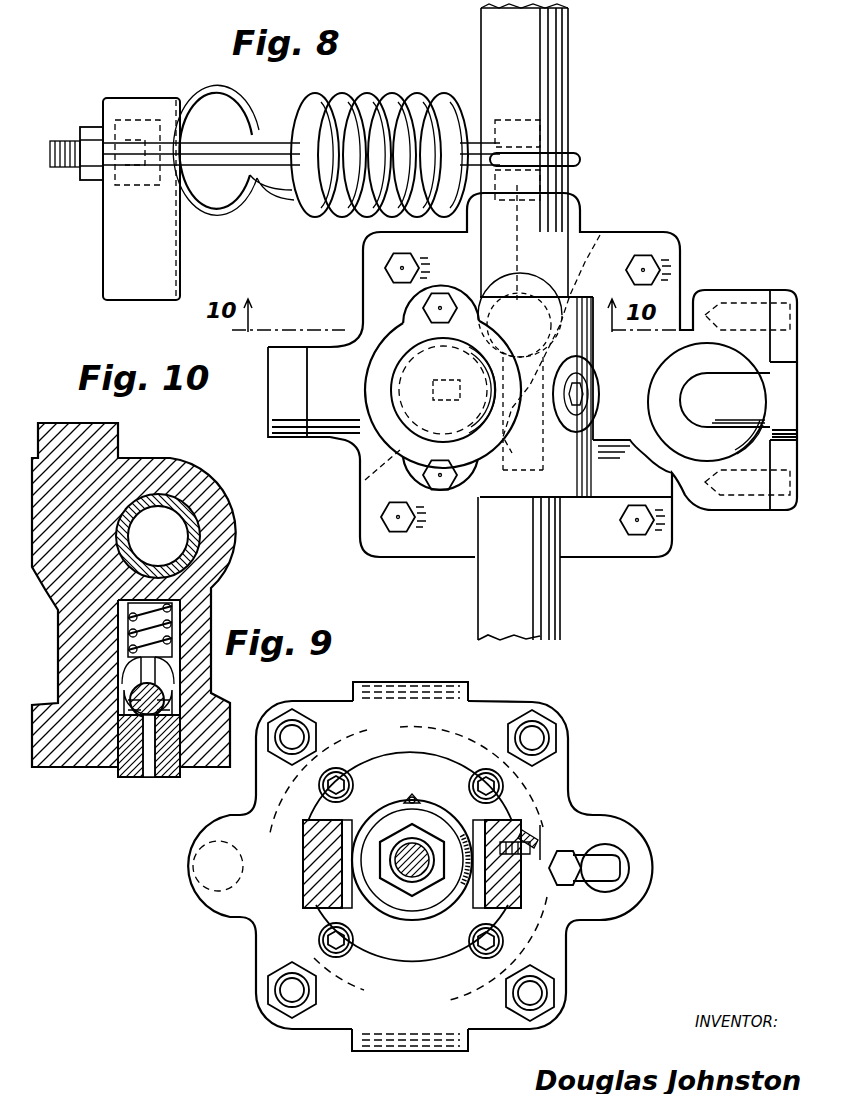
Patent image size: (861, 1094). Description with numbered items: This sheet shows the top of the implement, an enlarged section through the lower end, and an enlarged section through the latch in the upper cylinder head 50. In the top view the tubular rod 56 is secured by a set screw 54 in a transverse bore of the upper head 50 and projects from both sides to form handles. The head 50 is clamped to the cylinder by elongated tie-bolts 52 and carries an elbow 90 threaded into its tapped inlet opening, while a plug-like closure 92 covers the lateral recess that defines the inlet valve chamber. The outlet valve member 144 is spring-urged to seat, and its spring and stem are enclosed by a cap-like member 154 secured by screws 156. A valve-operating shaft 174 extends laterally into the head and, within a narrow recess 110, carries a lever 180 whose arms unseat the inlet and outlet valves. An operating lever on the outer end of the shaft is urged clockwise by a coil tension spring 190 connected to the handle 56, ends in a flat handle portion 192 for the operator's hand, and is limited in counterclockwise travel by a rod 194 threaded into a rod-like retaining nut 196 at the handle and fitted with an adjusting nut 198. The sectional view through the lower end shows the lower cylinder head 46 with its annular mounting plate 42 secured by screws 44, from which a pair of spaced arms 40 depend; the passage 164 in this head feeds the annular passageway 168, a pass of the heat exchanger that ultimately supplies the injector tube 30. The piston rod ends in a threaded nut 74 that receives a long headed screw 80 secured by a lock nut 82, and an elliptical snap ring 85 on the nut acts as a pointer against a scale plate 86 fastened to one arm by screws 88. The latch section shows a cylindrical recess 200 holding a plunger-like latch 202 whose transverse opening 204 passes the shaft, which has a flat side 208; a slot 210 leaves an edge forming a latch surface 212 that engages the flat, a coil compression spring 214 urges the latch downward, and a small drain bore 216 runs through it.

In FIG. 9, the injector tube 30 is at (600, 858).
In FIG. 9, the spaced arms 40 is at (303, 890).
In FIG. 9, the annular mounting plate 42 is at (365, 965).
In FIG. 9, the screws 44 is at (505, 786).
In FIG. 9, the lower cylinder head 46 is at (510, 703).
In FIG. 8, the upper cylinder head 50 is at (640, 232).
In FIG. 10, the upper cylinder head 50 is at (228, 530).
In FIG. 8, the tie-bolts 52 is at (660, 262).
In FIG. 9, the tie-bolts 52 is at (545, 733).
In FIG. 8, the set screw 54 is at (583, 392).
In FIG. 8, the tubular rod 56 is at (568, 78).
In FIG. 10, the tubular rod 56 is at (183, 492).
In FIG. 9, the nut 74 is at (402, 800).
In FIG. 9, the long headed screw 80 is at (410, 883).
In FIG. 9, the lock nut 82 is at (430, 880).
In FIG. 9, the snap ring 85 is at (440, 806).
In FIG. 9, the scale plate 86 is at (548, 828).
In FIG. 9, the screws 88 is at (539, 841).
In FIG. 8, the elbow 90 is at (730, 378).
In FIG. 8, the plug-like closure 92 is at (770, 512).
In FIG. 8, the narrow recess 110 is at (534, 385).
In FIG. 8, the cylindrical valve member 144 is at (356, 477).
In FIG. 8, the cap-like member 154 is at (358, 456).
In FIG. 8, the screws 156 is at (427, 305).
In FIG. 9, the passage 164 is at (200, 905).
In FIG. 9, the annular passageway 168 is at (420, 875).
In FIG. 8, the valve-operating shaft 174 is at (538, 222).
In FIG. 10, the valve-operating shaft 174 is at (108, 768).
In FIG. 8, the lever 180 is at (443, 390).
In FIG. 8, the coil tension spring 190 is at (405, 93).
In FIG. 8, the flat handle portion 192 is at (120, 255).
In FIG. 8, the rod 194 is at (268, 172).
In FIG. 8, the retaining nut 196 is at (576, 128).
In FIG. 8, the adjusting nut 198 is at (92, 125).
In FIG. 10, the cylindrical recess 200 is at (176, 777).
In FIG. 8, the latch 202 is at (596, 267).
In FIG. 10, the latch 202 is at (128, 780).
In FIG. 10, the latch opening 204 is at (166, 710).
In FIG. 10, the flat side 208 is at (163, 695).
In FIG. 10, the slot 210 is at (135, 690).
In FIG. 10, the latch surface 212 is at (150, 680).
In FIG. 10, the coil compression spring 214 is at (175, 612).
In FIG. 10, the drain bore 216 is at (149, 778).